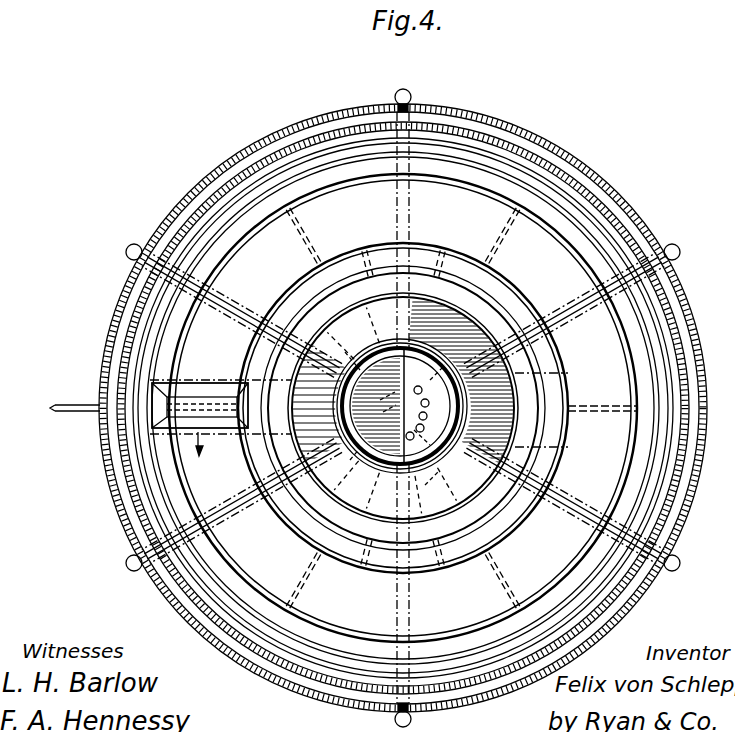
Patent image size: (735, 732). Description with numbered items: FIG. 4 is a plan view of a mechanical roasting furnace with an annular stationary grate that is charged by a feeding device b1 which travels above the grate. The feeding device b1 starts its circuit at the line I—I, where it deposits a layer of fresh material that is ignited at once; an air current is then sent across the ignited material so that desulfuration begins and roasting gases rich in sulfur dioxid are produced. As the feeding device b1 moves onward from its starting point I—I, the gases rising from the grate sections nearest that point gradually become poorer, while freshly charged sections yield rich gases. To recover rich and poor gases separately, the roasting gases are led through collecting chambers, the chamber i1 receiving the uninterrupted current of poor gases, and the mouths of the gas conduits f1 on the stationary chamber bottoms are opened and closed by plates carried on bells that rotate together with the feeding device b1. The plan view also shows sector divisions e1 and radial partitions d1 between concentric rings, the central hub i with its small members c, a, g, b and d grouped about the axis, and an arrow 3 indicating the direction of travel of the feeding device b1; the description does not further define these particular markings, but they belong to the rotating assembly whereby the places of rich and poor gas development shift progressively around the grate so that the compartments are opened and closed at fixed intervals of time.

The collecting chamber i1 is at (403, 408).
The annular chambers e1 is at (403, 384).
The radial partitions d1 is at (405, 409).
The gas conduit f1 is at (403, 408).
The feeding device b1 is at (260, 374).
The direction arrow 3 is at (198, 435).
The starting line I is at (149, 408).
The hub i is at (400, 406).
The rollers c is at (386, 418).
The shaft a is at (388, 403).
The gear g is at (422, 438).
The bearing b is at (350, 404).
The disc d is at (425, 431).